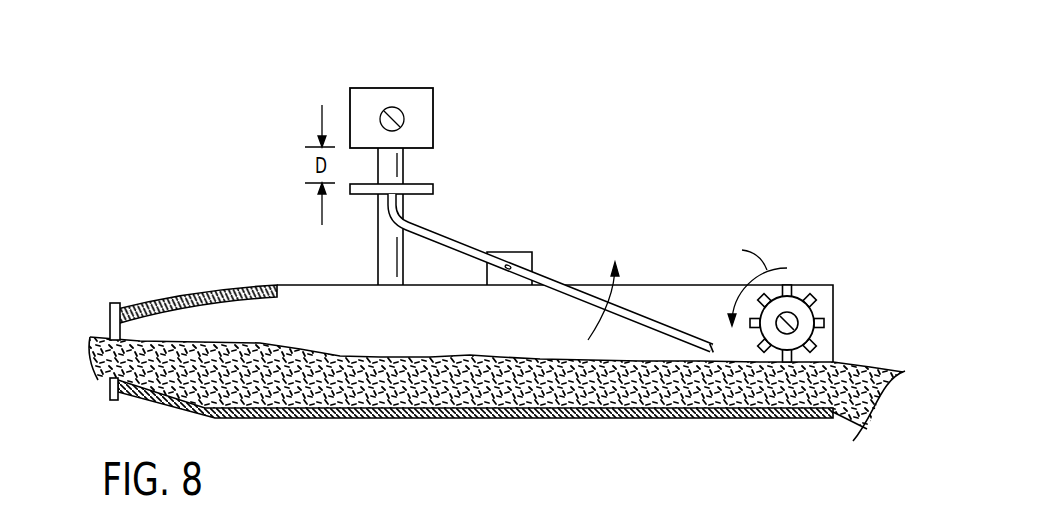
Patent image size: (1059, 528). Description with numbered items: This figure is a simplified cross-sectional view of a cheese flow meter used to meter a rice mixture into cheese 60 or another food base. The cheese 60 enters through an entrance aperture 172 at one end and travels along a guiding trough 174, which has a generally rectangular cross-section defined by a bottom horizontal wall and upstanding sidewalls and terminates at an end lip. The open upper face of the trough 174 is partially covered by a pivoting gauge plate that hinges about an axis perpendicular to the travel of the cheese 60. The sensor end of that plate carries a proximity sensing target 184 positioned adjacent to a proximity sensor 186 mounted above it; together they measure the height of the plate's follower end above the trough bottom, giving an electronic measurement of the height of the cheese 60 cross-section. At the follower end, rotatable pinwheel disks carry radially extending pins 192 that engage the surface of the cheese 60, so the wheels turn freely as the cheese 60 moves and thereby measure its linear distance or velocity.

The cheese 60 is at (655, 397).
The entrance aperture 172 is at (113, 400).
The guiding trough 174 is at (383, 419).
The proximity sensing target 184 is at (400, 208).
The proximity sensor 186 is at (423, 130).
The radially extending pins 192 is at (812, 346).